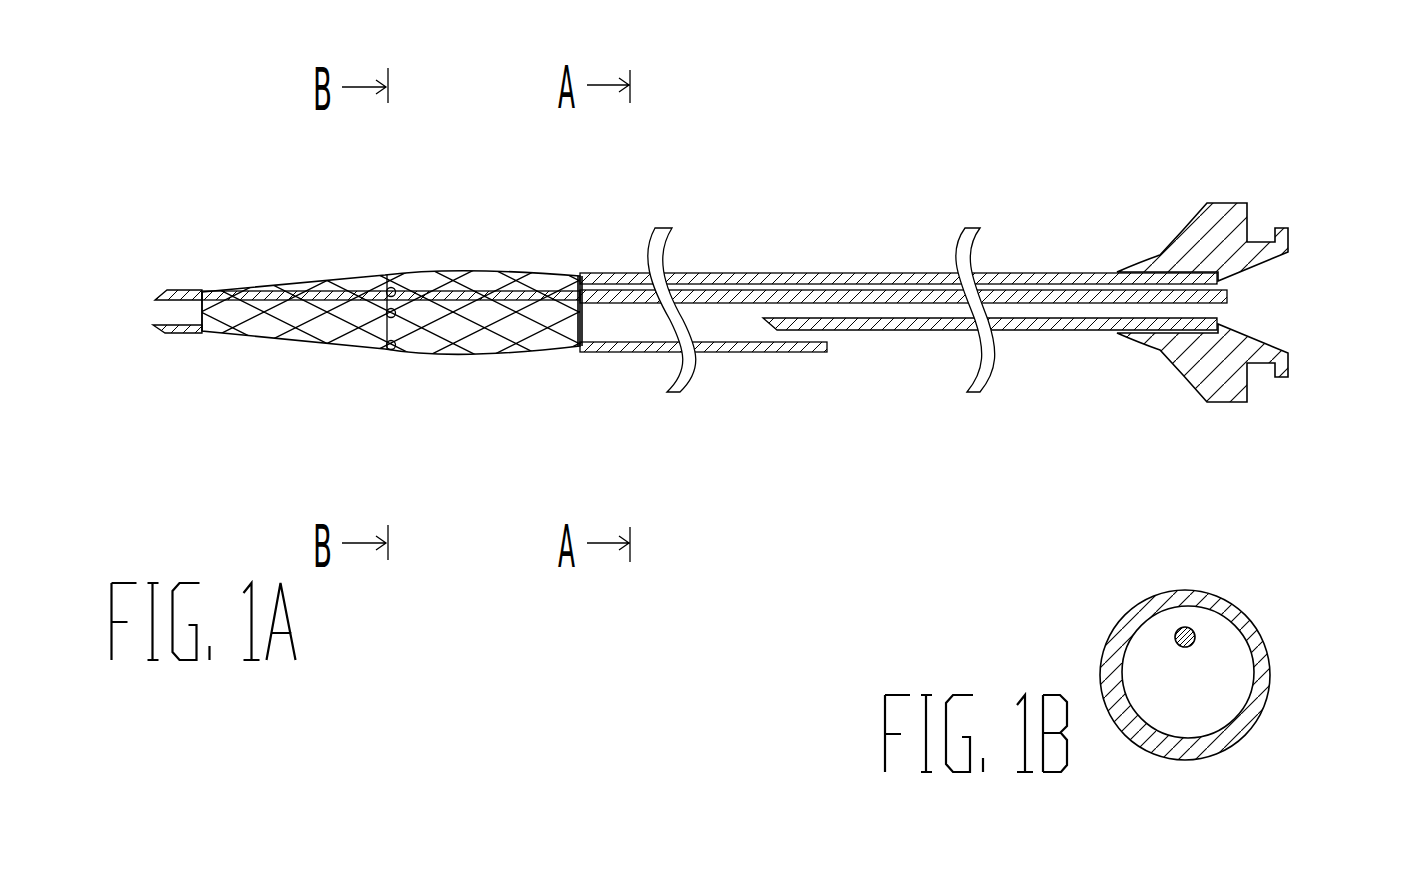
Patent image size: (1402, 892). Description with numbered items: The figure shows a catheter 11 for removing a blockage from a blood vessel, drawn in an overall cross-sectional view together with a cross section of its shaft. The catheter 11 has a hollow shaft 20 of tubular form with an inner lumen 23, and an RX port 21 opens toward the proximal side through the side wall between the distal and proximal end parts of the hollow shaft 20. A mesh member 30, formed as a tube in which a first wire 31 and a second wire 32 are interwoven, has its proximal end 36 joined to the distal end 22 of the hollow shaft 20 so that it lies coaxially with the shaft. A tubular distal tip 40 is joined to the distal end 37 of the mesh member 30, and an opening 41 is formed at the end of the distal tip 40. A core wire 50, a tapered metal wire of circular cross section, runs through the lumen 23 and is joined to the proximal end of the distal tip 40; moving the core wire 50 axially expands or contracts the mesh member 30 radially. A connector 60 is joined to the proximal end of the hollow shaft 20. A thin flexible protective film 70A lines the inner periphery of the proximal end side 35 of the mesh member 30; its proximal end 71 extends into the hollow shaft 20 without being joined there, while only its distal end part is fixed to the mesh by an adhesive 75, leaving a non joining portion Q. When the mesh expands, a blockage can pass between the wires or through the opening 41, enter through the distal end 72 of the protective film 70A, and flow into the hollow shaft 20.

In FIG. 1A, the catheter 11 is at (933, 152).
In FIG. 1A, the hollow shaft 20 is at (750, 278).
In FIG. 1B, the hollow shaft 20 is at (1263, 683).
In FIG. 1A, the RX port 21 is at (830, 336).
In FIG. 1A, the distal end of the hollow shaft 22 is at (583, 278).
In FIG. 1A, the inner lumen 23 is at (708, 342).
In FIG. 1B, the inner lumen 23 is at (1208, 713).
In FIG. 1A, the mesh member 30 is at (302, 284).
In FIG. 1A, the first wire 31 is at (417, 345).
In FIG. 1A, the second wire 32 is at (520, 352).
In FIG. 1A, the proximal end side of the mesh member 35 is at (543, 251).
In FIG. 1A, the proximal end of the mesh member 36 is at (578, 340).
In FIG. 1A, the distal end of the mesh member 37 is at (202, 331).
In FIG. 1A, the distal tip 40 is at (190, 335).
In FIG. 1A, the opening 41 is at (157, 301).
In FIG. 1A, the core wire 50 is at (756, 305).
In FIG. 1B, the core wire 50 is at (1192, 630).
In FIG. 1A, the connector 60 is at (1170, 352).
In FIG. 1A, the protective film 70A is at (481, 272).
In FIG. 1A, the proximal end of the protective film 71 is at (600, 346).
In FIG. 1A, the distal end of the protective film 72 is at (385, 350).
In FIG. 1A, the adhesive 75 is at (386, 272).
In FIG. 1A, the non joining portion Q is at (503, 386).